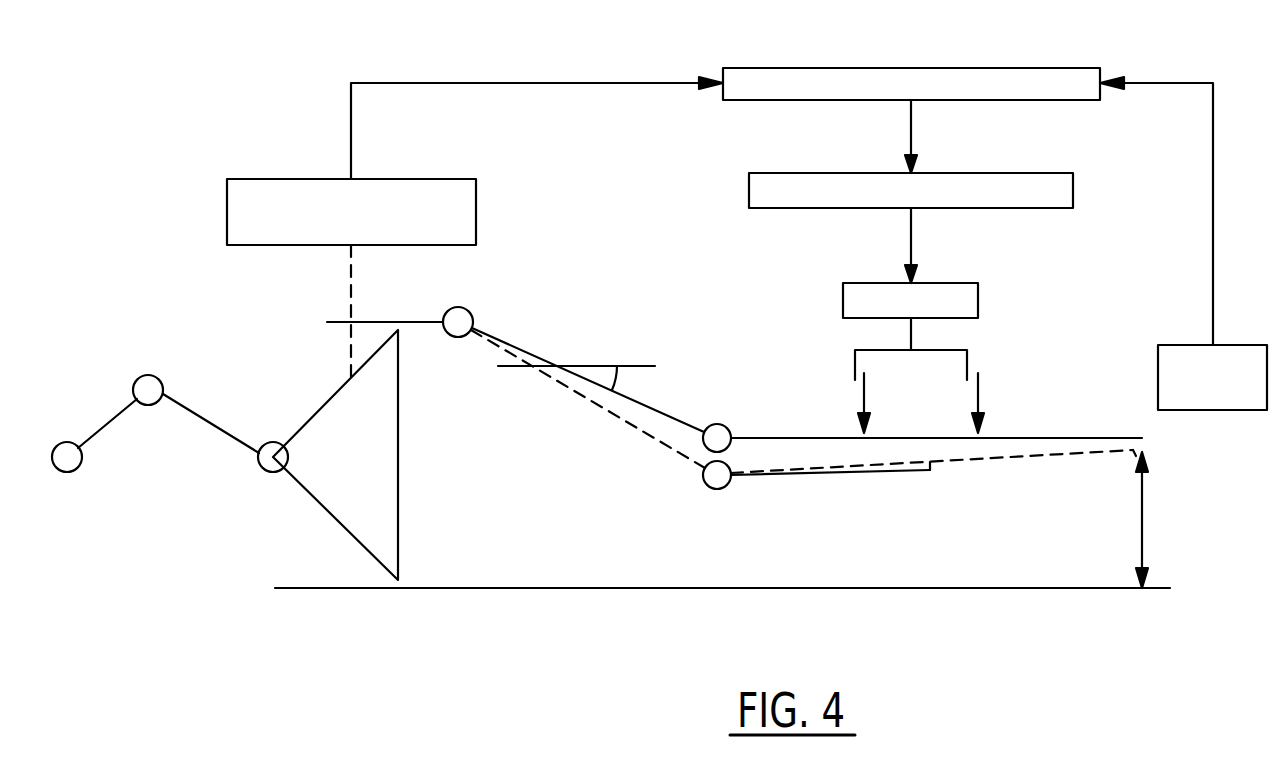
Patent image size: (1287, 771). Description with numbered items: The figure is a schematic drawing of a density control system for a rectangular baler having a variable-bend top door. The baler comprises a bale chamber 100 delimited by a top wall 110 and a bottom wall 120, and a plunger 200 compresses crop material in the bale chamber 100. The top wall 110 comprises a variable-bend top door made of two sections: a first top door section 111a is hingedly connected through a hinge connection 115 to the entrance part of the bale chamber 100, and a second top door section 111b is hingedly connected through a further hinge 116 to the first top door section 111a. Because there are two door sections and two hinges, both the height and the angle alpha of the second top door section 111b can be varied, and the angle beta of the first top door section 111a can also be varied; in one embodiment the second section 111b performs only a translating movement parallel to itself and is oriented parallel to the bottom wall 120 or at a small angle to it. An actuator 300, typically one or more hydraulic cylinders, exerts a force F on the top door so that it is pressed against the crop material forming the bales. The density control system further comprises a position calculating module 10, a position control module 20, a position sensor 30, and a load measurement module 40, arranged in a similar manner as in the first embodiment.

The position calculating module 10 is at (1047, 68).
The position control module 20 is at (1055, 173).
The actuator 300 is at (977, 290).
The position sensor 30 is at (1178, 345).
The load measurement module 40 is at (458, 226).
The plunger 200 is at (345, 480).
The hinge connection 115 is at (460, 325).
The first top door section 111a is at (578, 378).
The hinge 116 is at (718, 436).
The second top door section 111b is at (810, 437).
The top wall 110 is at (995, 466).
The bale chamber 100 is at (962, 541).
The bottom wall 120 is at (703, 588).